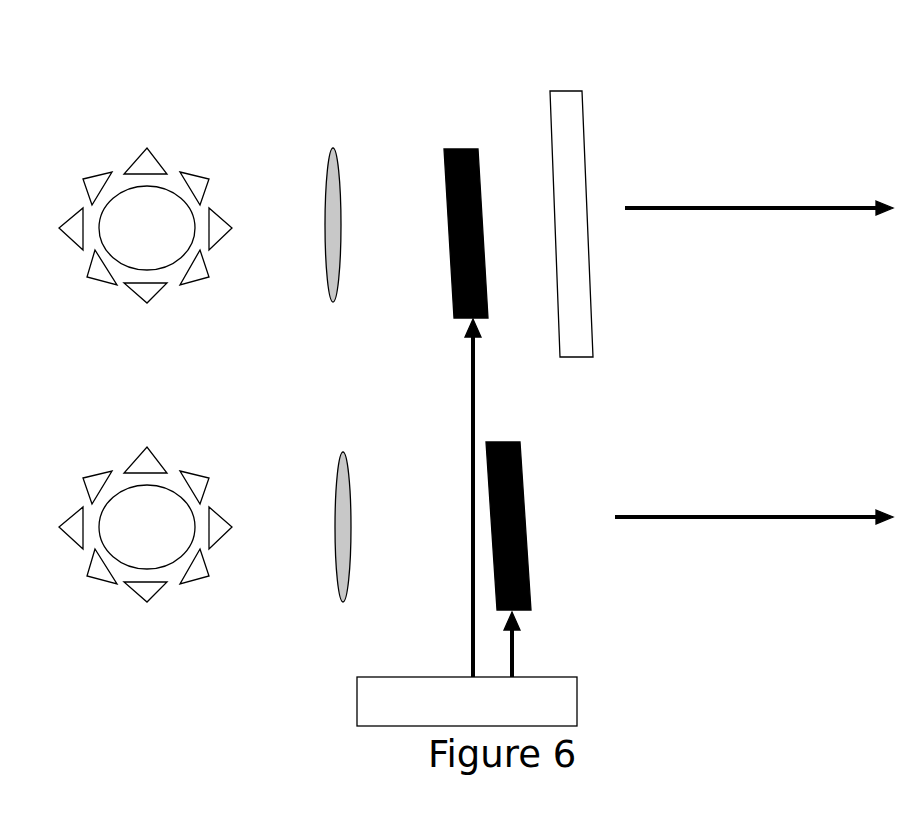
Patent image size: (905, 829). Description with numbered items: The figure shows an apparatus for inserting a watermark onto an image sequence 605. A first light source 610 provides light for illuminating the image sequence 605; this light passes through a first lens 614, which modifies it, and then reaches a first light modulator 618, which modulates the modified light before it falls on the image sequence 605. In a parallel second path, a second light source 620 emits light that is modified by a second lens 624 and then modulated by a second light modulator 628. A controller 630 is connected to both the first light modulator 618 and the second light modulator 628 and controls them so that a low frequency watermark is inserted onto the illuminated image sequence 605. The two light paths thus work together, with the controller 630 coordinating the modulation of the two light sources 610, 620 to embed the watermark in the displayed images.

The image sequence 605 is at (584, 122).
The first light source 610 is at (145, 169).
The first lens 614 is at (339, 176).
The first light modulator 618 is at (495, 167).
The second light source 620 is at (145, 469).
The second lens 624 is at (351, 484).
The second light modulator 628 is at (522, 470).
The controller 630 is at (467, 522).